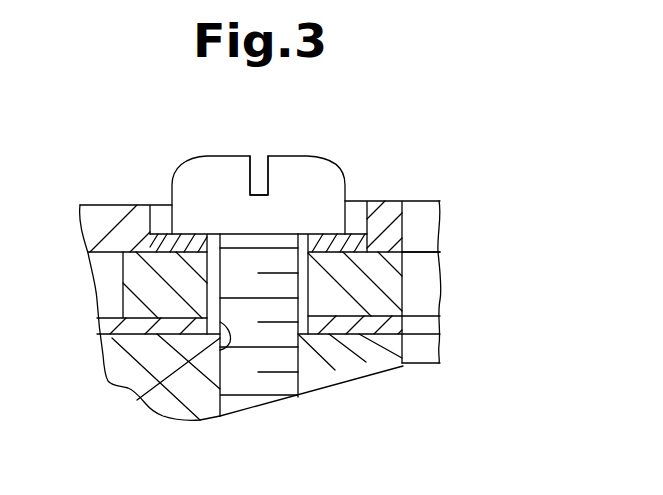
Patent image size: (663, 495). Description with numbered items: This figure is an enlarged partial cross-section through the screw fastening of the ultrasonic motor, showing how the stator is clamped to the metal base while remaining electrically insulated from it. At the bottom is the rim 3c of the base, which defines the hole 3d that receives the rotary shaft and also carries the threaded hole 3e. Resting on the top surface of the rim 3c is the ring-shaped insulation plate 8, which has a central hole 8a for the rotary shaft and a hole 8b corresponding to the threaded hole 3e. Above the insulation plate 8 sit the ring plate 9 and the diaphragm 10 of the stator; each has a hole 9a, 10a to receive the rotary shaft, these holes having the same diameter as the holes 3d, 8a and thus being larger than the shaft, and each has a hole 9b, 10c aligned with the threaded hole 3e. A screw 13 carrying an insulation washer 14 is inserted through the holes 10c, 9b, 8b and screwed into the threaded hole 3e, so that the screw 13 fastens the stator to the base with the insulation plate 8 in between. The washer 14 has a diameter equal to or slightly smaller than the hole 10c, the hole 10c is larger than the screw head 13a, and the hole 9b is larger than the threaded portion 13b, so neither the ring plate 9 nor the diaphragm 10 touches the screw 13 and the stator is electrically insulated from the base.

The rim 3c is at (345, 368).
The hole 3d is at (413, 353).
The threaded hole 3e is at (222, 382).
The insulation plate 8 is at (105, 327).
The hole 8a is at (403, 318).
The hole 8b is at (148, 386).
The ring plate 9 is at (123, 268).
The hole 9a is at (403, 305).
The hole 9b is at (343, 276).
The diaphragm 10 is at (108, 204).
The hole 10a is at (403, 230).
The hole 10c is at (368, 212).
The screw 13 is at (310, 159).
The screw head 13a is at (223, 170).
The threaded portion 13b is at (283, 382).
The insulation washer 14 is at (181, 238).